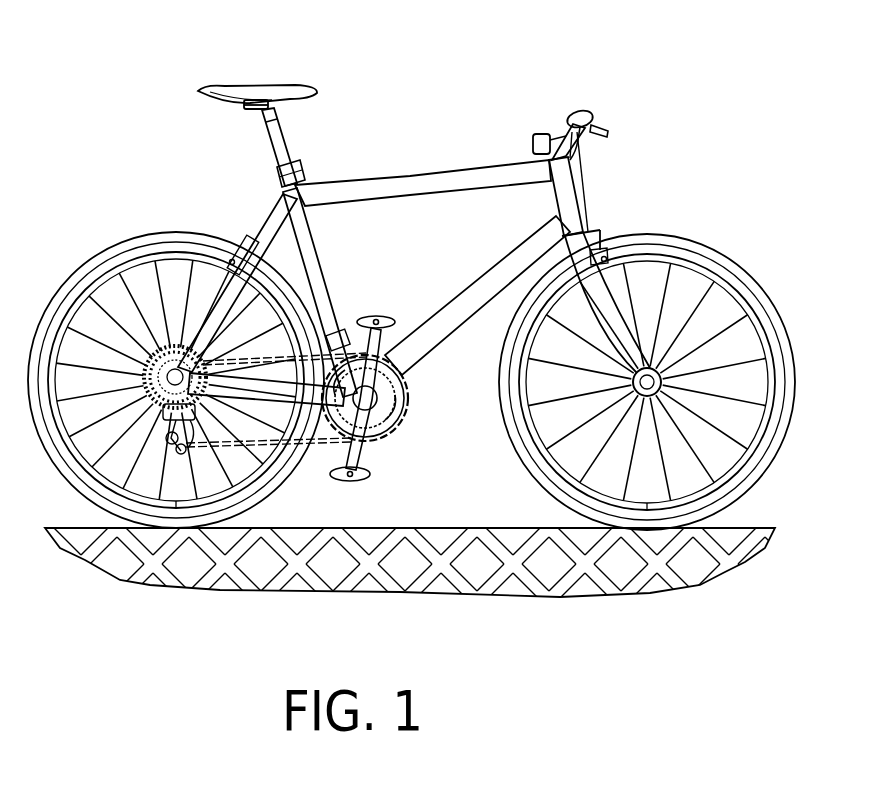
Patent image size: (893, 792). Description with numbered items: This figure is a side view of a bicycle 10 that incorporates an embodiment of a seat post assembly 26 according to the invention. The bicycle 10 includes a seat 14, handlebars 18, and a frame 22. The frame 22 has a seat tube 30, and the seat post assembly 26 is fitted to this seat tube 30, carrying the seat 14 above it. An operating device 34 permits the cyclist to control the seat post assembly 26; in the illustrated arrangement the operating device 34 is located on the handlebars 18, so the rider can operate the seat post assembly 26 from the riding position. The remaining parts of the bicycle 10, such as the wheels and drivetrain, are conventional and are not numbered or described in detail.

The bicycle 10 is at (584, 63).
The seat 14 is at (230, 93).
The handlebars 18 is at (585, 110).
The frame 22 is at (385, 188).
The seat post assembly 26 is at (267, 148).
The seat tube 30 is at (320, 252).
The operating device 34 is at (585, 130).